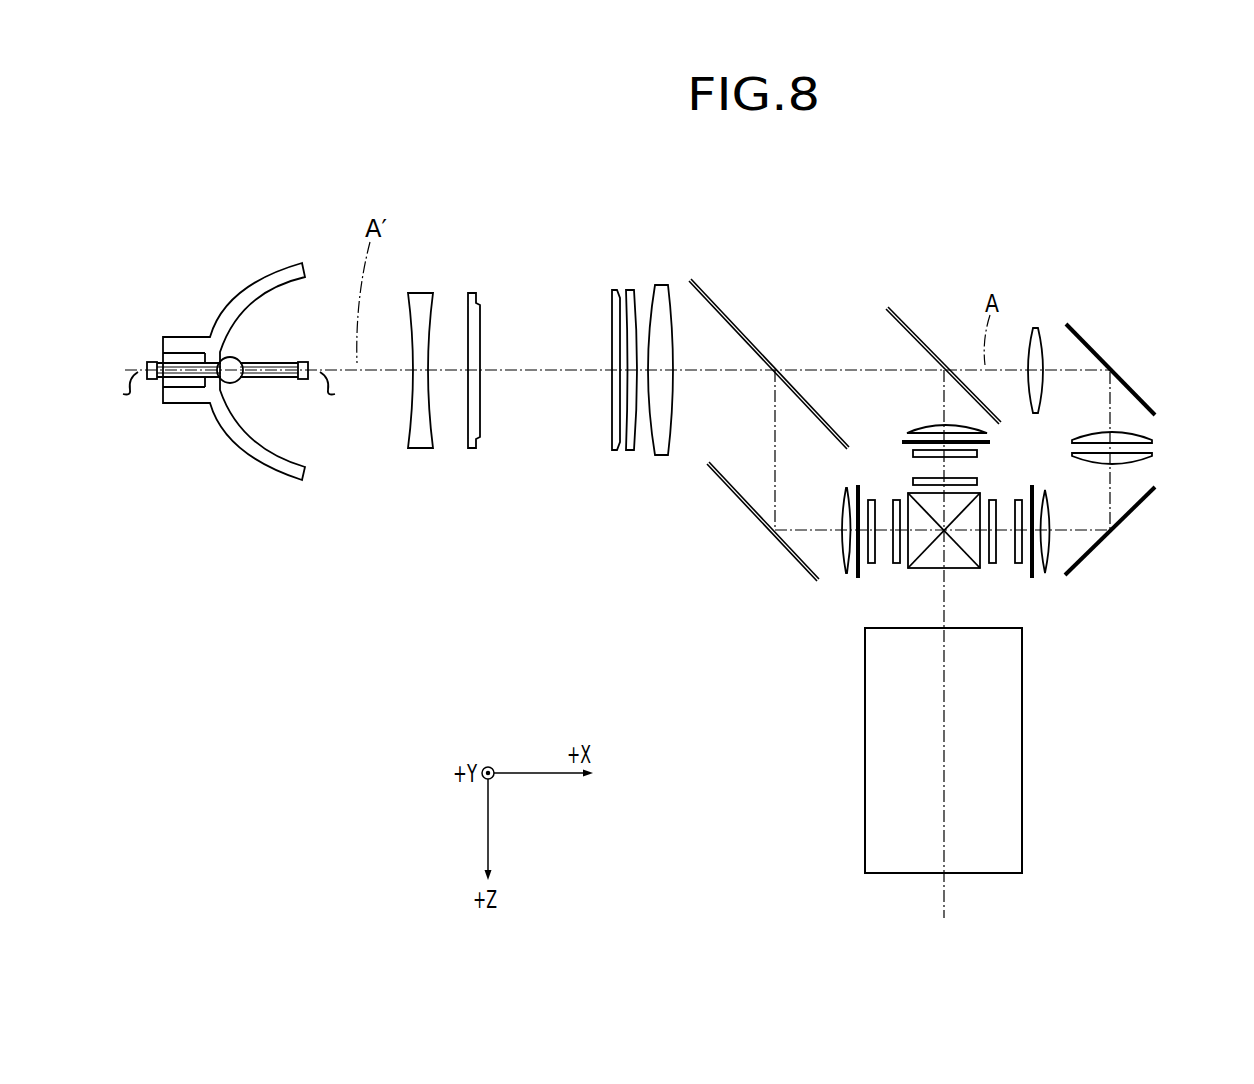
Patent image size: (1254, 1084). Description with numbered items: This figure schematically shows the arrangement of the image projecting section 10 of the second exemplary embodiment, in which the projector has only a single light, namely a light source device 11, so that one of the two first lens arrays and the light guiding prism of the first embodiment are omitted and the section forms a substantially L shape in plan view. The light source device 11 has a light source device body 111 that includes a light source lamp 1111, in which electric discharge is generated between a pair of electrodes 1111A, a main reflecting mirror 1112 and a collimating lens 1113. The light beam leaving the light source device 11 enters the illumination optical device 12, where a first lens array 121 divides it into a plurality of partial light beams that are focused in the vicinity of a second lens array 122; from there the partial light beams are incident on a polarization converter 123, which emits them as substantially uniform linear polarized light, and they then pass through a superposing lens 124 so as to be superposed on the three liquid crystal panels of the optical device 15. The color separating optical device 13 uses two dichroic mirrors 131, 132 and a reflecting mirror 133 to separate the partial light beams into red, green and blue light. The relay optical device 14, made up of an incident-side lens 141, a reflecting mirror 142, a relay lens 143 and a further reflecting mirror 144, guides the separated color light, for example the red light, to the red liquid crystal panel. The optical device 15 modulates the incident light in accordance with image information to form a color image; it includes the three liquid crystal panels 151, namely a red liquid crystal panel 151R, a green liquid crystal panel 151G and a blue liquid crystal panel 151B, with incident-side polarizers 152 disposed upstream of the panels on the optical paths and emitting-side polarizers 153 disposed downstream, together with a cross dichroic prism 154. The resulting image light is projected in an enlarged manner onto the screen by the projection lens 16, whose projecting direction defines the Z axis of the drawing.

The image projecting section 10 is at (640, 496).
The light source device 11 is at (278, 298).
The light source device body 111 is at (392, 153).
The light source lamp 1111 is at (290, 412).
The electrodes 1111A is at (240, 388).
The main reflecting mirror 1112 is at (280, 278).
The collimating lens 1113 is at (417, 292).
The illumination optical device 12 is at (622, 220).
The first lens array 121 is at (480, 330).
The second lens array 122 is at (618, 300).
The polarization converter 123 is at (635, 297).
The superposing lens 124 is at (667, 318).
The color separating optical device 13 is at (838, 294).
The dichroic mirror 131 is at (723, 310).
The dichroic mirror 132 is at (900, 313).
The reflecting mirror 133 is at (737, 490).
The relay optical device 14 is at (1124, 335).
The incident-side lens 141 is at (1037, 330).
The reflecting mirror 142 is at (1133, 394).
The relay lens 143 is at (1153, 460).
The reflecting mirror 144 is at (1100, 562).
The optical device 15 is at (1046, 429).
The liquid crystal panel 151 is at (1017, 575).
The red liquid crystal panel 151R is at (1019, 563).
The green liquid crystal panel 151G is at (977, 455).
The blue liquid crystal panel 151B is at (871, 563).
The incident-side polarizer 152 is at (900, 442).
The emitting-side polarizer 153 is at (913, 481).
The cross dichroic prism 154 is at (950, 568).
The projection lens 16 is at (1023, 828).